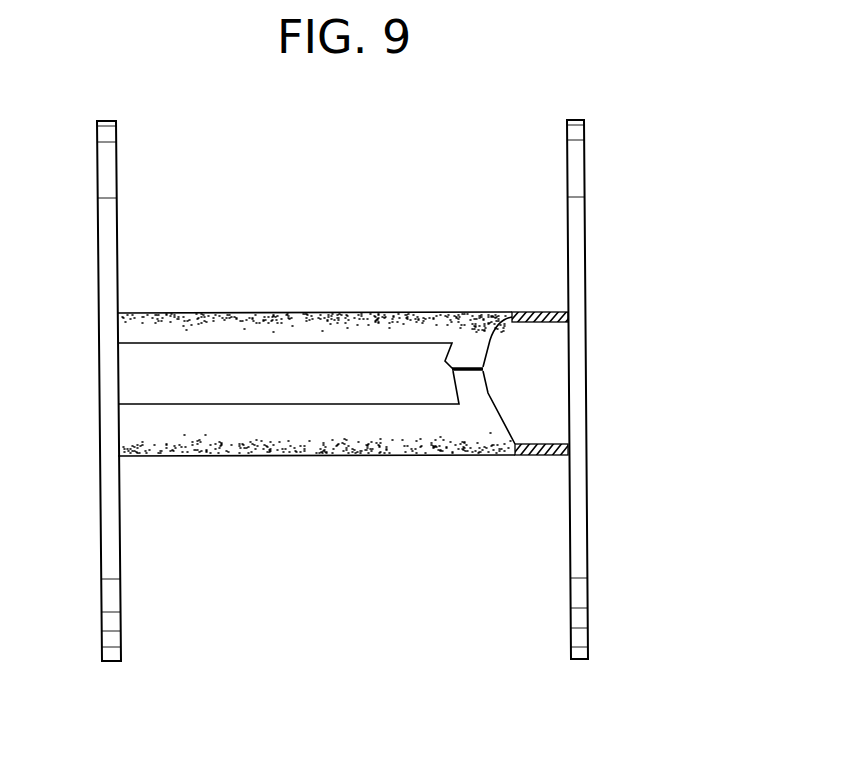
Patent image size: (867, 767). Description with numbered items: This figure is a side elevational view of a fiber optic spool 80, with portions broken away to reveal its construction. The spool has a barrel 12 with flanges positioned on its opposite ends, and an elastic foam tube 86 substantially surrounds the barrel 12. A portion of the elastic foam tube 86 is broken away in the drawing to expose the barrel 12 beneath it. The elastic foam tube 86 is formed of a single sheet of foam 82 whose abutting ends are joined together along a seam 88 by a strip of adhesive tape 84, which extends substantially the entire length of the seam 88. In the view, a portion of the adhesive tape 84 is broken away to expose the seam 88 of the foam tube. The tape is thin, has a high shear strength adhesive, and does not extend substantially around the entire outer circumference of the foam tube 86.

The fiber optic spool 80 is at (650, 316).
The barrel 12 is at (520, 415).
The strip of adhesive tape 84 is at (258, 347).
The seam 88 is at (467, 355).
The elastic foam tube 86 is at (363, 278).
The single sheet of foam 82 is at (377, 433).